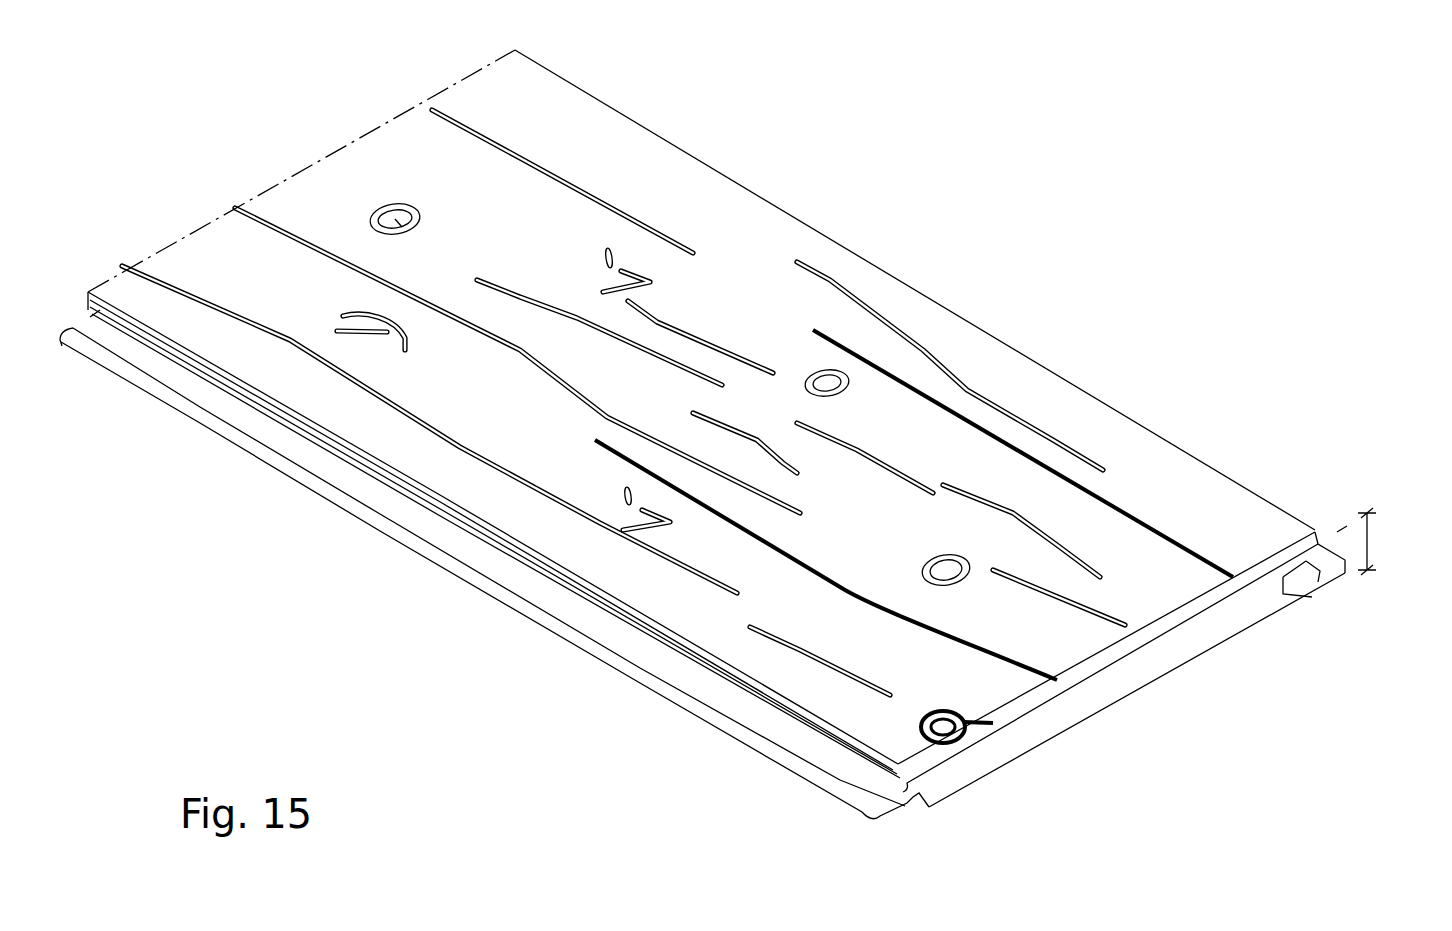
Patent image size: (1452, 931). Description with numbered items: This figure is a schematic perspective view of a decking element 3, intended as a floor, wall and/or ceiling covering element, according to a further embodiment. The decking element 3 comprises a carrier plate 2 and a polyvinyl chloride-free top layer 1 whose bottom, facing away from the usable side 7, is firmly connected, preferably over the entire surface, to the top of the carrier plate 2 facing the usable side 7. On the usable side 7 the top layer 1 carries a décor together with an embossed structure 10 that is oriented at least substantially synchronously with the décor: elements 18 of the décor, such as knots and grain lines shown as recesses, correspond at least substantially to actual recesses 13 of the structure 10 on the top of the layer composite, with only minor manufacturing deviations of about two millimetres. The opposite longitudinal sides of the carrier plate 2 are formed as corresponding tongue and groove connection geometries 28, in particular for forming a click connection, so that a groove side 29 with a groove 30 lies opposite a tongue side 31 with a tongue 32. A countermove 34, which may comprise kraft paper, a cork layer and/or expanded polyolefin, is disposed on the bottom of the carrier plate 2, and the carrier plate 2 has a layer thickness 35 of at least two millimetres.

The top layer 1 is at (1162, 622).
The carrier plate 2 is at (1263, 610).
The decking element 3 is at (1058, 196).
The usable side 7 is at (1050, 387).
The structure 10 is at (1043, 540).
The recesses 13 is at (1236, 563).
The elements of the décor 18 is at (372, 193).
The tongue and groove connection geometry 28 is at (510, 613).
The groove side 29 is at (1322, 495).
The groove 30 is at (1308, 588).
The tongue side 31 is at (827, 807).
The tongue 32 is at (640, 662).
The countermove 34 is at (1108, 718).
The layer thickness 35 is at (1372, 540).